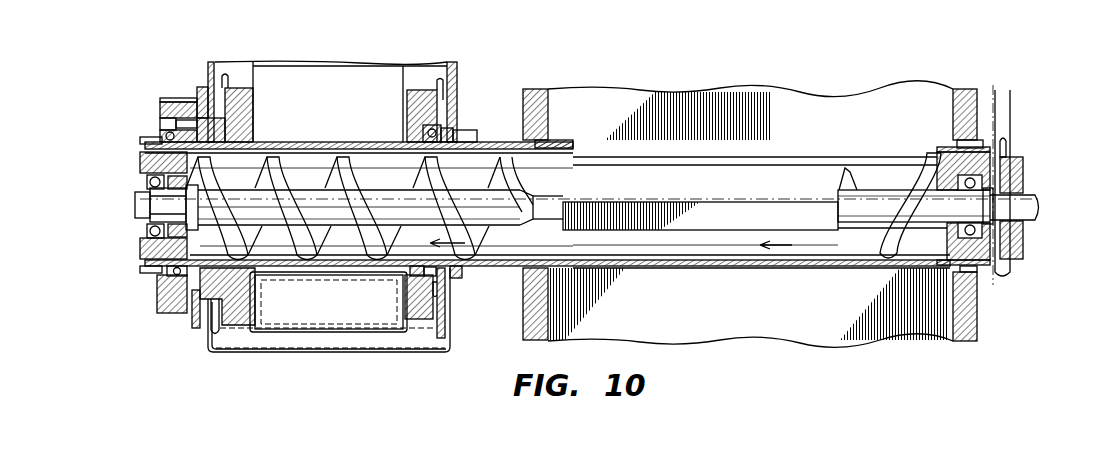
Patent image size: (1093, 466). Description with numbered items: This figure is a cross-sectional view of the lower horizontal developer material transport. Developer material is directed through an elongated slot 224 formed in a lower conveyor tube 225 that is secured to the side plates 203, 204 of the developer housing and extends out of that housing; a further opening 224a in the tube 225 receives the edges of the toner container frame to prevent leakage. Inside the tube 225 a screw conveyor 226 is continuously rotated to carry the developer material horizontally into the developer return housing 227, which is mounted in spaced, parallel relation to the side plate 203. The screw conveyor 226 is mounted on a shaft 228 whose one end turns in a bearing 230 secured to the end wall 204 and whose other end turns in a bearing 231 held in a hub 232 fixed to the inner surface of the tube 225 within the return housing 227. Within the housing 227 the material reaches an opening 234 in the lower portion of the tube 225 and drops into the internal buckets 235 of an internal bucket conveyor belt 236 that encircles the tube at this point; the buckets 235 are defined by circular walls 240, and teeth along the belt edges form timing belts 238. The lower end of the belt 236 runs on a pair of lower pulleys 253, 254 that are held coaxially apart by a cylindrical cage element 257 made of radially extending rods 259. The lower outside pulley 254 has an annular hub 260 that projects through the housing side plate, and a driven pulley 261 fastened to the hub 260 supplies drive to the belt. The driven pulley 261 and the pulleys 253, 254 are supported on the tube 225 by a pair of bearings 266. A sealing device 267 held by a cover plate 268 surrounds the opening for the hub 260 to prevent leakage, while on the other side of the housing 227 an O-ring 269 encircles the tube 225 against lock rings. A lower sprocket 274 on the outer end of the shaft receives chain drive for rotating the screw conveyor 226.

The side plate 203 is at (548, 100).
The side plate 204 is at (950, 92).
The elongated slot 224 is at (670, 232).
The opening 224a is at (781, 160).
The lower conveyor tube 225 is at (728, 267).
The screw conveyor 226 is at (870, 241).
The developer return housing 227 is at (457, 74).
The shaft 228 is at (522, 196).
The bearing 230 is at (950, 240).
The bearing 231 is at (145, 228).
The hub 232 is at (140, 252).
The opening 234 is at (372, 196).
The internal buckets 235 is at (362, 325).
The internal bucket conveyor belt 236 is at (262, 69).
The timing belts 238 is at (415, 69).
The circular wall 240 is at (265, 293).
The lower pulley 253 is at (440, 305).
The lower outside pulley 254 is at (240, 318).
The cylindrical cage element 257 is at (315, 263).
The rods 259 is at (307, 143).
The annular hub 260 is at (208, 85).
The driven pulley 261 is at (160, 108).
The bearings 266 is at (163, 130).
The sealing device 267 is at (199, 334).
The cover plate 268 is at (187, 320).
The O-ring 269 is at (466, 280).
The lower sprocket 274 is at (1013, 152).